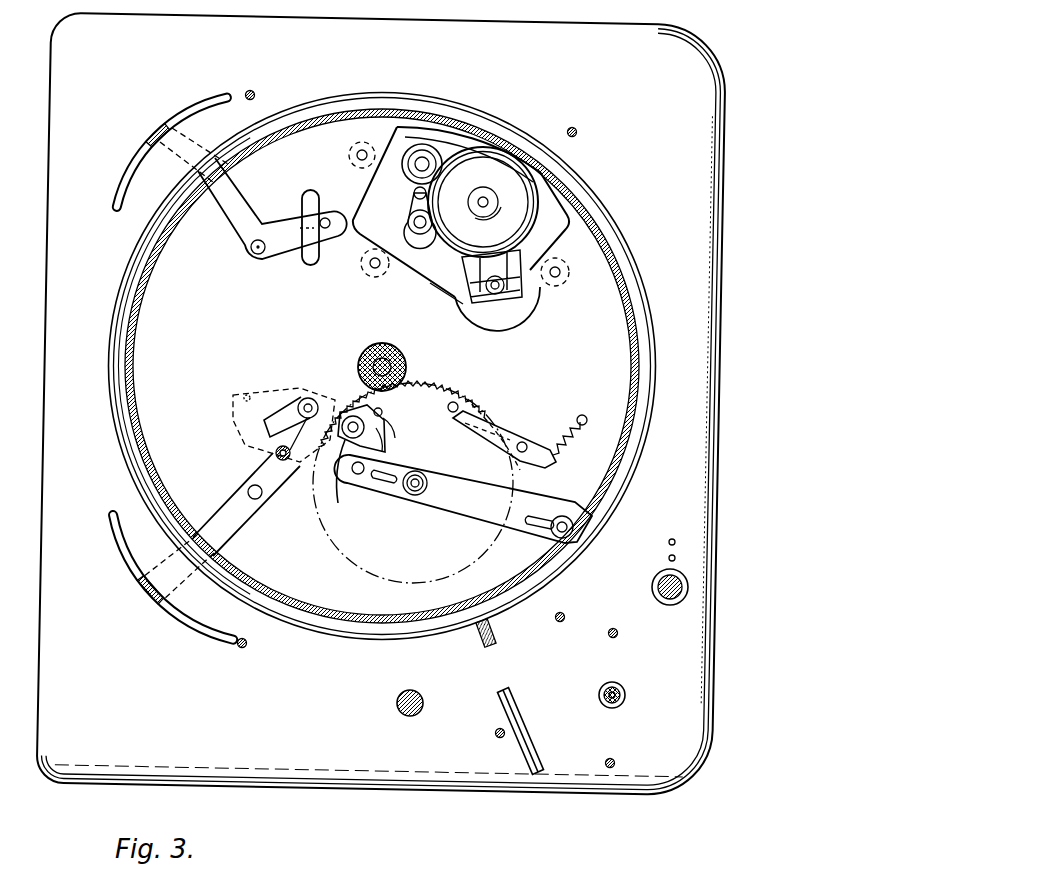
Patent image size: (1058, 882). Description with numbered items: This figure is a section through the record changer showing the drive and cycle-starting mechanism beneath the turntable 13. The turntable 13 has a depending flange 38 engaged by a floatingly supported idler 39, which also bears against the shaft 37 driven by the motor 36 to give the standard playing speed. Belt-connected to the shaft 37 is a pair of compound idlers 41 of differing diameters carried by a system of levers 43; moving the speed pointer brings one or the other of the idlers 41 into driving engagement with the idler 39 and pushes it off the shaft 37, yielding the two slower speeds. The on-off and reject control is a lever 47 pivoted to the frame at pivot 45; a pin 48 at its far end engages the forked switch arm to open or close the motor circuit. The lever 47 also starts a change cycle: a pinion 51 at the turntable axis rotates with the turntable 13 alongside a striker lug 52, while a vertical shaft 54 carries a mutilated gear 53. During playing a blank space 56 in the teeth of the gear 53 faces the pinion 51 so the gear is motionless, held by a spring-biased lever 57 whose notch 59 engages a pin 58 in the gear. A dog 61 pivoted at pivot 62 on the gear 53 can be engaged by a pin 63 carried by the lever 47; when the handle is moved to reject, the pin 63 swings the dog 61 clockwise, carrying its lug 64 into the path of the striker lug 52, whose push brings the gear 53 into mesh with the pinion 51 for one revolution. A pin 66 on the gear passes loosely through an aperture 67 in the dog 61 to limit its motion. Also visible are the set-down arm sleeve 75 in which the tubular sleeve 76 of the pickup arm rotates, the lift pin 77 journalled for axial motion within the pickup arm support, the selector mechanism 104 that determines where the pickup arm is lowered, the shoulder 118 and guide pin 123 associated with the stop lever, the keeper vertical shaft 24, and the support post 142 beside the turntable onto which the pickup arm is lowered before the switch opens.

The turntable 13 is at (632, 296).
The vertical shaft 24 is at (688, 582).
The motor 36 is at (397, 127).
The shaft 37 is at (425, 191).
The depending flange 38 is at (478, 165).
The idler 39 is at (515, 197).
The compound idlers 41 is at (404, 168).
The system of levers 43 is at (296, 258).
The pivot 45 is at (262, 497).
The lever 47 is at (240, 527).
The pin 48 is at (250, 459).
The pinion 51 is at (370, 355).
The striker lug 52 is at (405, 373).
The mutilated gear 53 is at (400, 580).
The vertical shaft 54 is at (412, 490).
The blank space 56 is at (383, 413).
The spring-biased lever 57 is at (520, 428).
The pin 58 is at (454, 413).
The notch 59 is at (497, 413).
The dog 61 is at (343, 484).
The pivot 62 is at (345, 418).
The pin 63 is at (303, 402).
The lug 64 is at (360, 393).
The pin 66 is at (396, 425).
The aperture 67 is at (384, 443).
The set-down arm sleeve 75 is at (622, 703).
The tubular sleeve 76 is at (600, 700).
The lift pin 77 is at (624, 688).
The selector mechanism 104 is at (512, 747).
The shoulder 118 is at (671, 539).
The guide pin 123 is at (668, 558).
The support post 142 is at (398, 714).